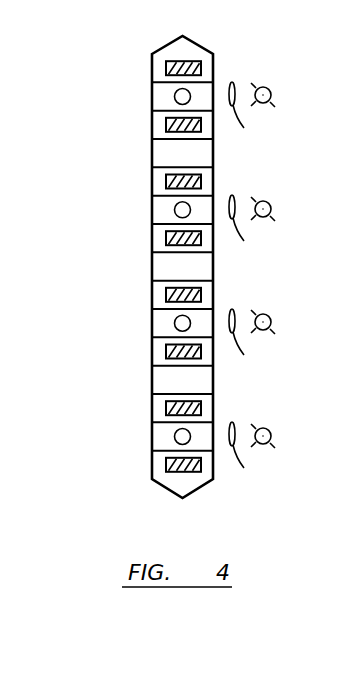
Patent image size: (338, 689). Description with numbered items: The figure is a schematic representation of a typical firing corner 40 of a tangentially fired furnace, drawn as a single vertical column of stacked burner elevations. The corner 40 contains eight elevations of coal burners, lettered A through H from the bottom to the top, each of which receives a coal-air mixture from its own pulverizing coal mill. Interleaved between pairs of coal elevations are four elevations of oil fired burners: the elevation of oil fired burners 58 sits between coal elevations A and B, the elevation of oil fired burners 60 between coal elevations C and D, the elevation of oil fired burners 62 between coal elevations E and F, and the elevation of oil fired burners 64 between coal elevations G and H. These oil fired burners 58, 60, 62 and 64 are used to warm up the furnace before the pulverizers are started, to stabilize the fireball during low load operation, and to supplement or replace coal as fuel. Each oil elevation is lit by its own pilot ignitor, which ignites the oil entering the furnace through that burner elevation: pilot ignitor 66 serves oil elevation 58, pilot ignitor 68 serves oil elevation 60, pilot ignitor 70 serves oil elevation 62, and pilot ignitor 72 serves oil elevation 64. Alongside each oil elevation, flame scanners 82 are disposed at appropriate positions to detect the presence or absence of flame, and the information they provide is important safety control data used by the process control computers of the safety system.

The corner 40 is at (135, 505).
The elevation of oil fired burners 58 is at (112, 439).
The elevation of oil fired burners 60 is at (112, 325).
The elevation of oil fired burners 62 is at (112, 212).
The elevation of oil fired burners 64 is at (112, 97).
The pilot ignitor 66 is at (246, 451).
The pilot ignitor 68 is at (246, 338).
The pilot ignitor 70 is at (247, 224).
The pilot ignitor 72 is at (246, 111).
The flame scanners 82 is at (270, 90).